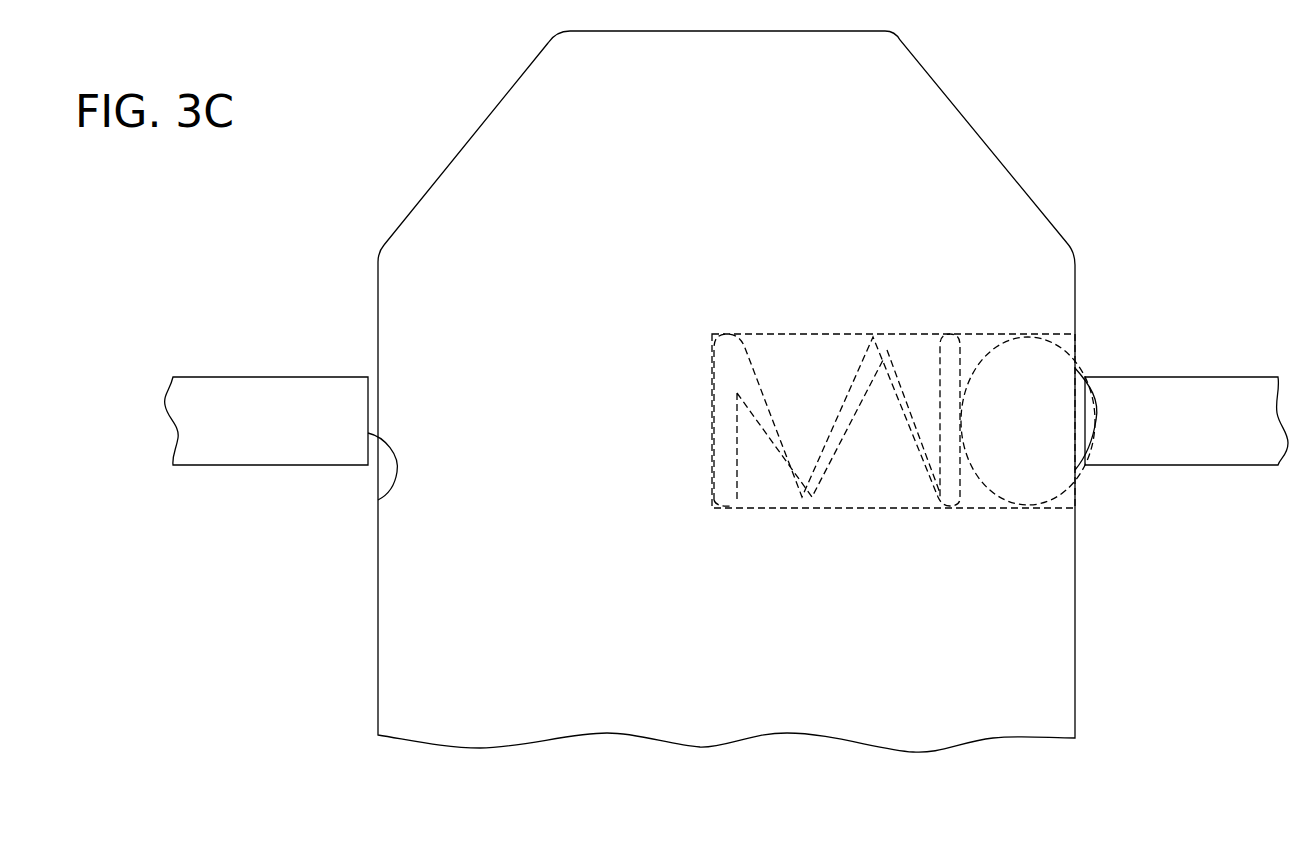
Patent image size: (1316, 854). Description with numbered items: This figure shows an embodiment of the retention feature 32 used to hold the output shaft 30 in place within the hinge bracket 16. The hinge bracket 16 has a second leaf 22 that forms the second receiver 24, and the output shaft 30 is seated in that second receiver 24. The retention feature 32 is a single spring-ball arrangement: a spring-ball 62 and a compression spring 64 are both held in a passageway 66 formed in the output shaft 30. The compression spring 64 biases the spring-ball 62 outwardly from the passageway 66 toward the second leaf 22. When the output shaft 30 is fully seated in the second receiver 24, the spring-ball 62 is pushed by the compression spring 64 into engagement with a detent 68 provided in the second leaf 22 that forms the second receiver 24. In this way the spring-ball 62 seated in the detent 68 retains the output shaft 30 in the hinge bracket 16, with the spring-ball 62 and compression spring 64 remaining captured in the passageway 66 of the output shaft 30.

The hinge bracket 16 is at (1213, 465).
The second leaf 22 is at (218, 388).
The second receiver 24 is at (378, 500).
The output shaft 30 is at (565, 707).
The retention feature 32 is at (1110, 209).
The spring-ball 62 is at (1040, 370).
The compression spring 64 is at (838, 437).
The passageway 66 is at (808, 334).
The detent 68 is at (1095, 437).